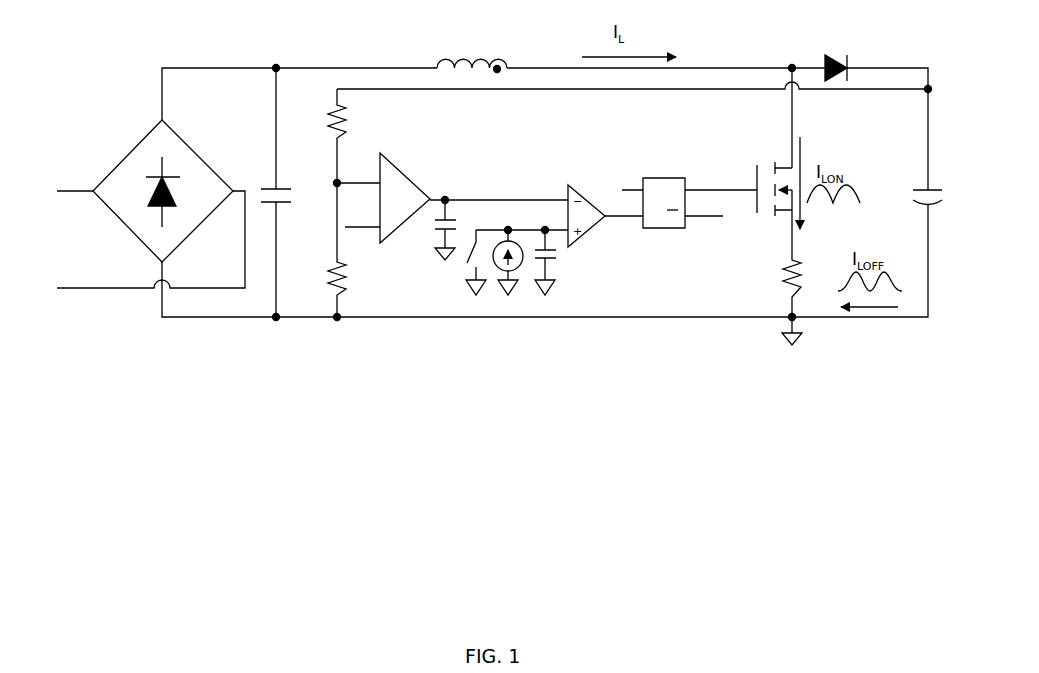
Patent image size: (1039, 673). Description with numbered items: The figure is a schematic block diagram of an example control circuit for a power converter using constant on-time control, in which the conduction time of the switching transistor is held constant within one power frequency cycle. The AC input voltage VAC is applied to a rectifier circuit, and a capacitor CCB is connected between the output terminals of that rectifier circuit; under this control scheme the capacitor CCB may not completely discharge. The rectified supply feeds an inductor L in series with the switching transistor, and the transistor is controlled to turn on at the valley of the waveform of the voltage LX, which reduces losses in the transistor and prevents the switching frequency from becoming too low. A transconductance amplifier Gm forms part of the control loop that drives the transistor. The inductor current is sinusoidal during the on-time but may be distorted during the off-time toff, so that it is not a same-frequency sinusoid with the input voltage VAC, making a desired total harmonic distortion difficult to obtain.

The inductor L is at (472, 50).
The voltage LX is at (779, 193).
The capacitor CCB is at (255, 193).
The transconductance amplifier Gm is at (383, 198).
The off-time toff is at (689, 197).
The AC input voltage VAC is at (129, 194).